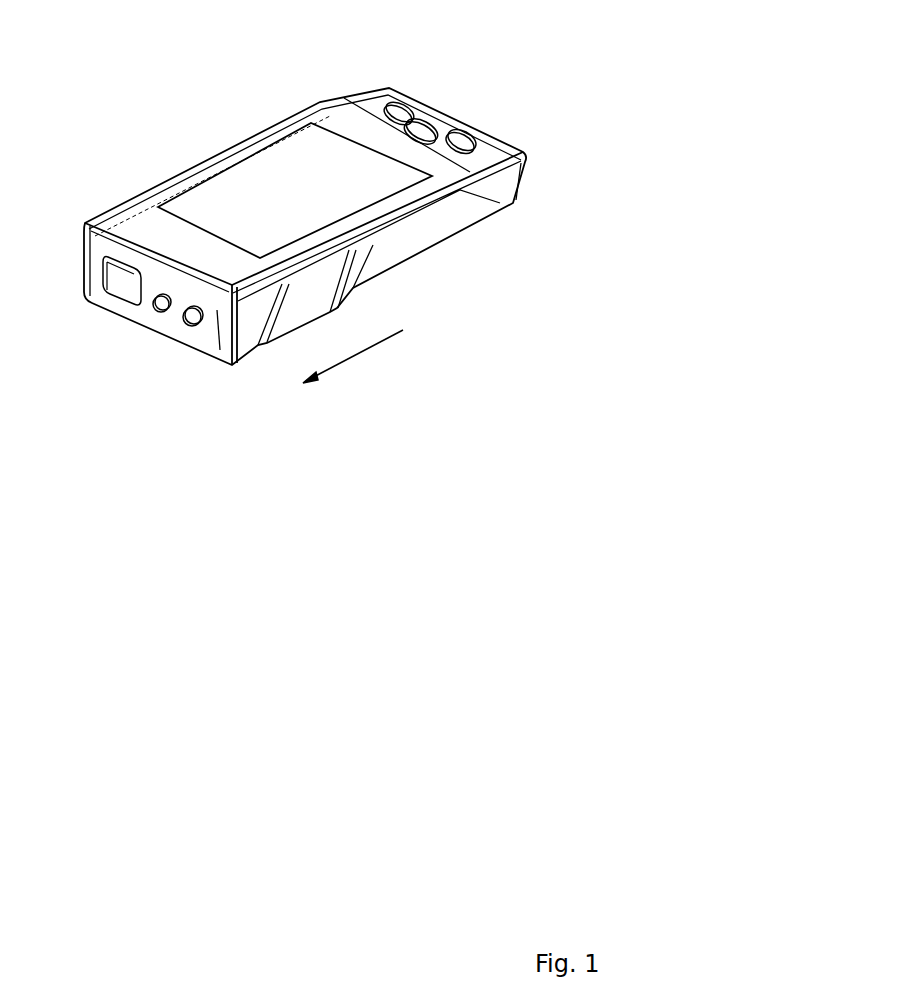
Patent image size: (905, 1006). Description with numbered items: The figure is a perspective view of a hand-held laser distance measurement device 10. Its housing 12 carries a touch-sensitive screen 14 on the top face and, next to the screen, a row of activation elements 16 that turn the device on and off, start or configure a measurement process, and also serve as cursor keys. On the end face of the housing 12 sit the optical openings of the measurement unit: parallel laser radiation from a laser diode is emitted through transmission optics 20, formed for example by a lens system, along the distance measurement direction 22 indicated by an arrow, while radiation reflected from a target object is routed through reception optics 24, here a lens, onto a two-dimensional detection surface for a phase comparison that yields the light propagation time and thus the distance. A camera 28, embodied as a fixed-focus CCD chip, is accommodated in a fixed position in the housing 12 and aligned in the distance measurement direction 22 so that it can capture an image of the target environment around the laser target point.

The laser distance measurement device 10 is at (108, 92).
The housing 12 is at (410, 248).
The touch-sensitive screen 14 is at (290, 158).
The activation elements 16 is at (407, 102).
The transmission optics 20 is at (163, 313).
The distance measurement direction 22 is at (347, 358).
The reception optics 24 is at (123, 278).
The camera 28 is at (194, 324).